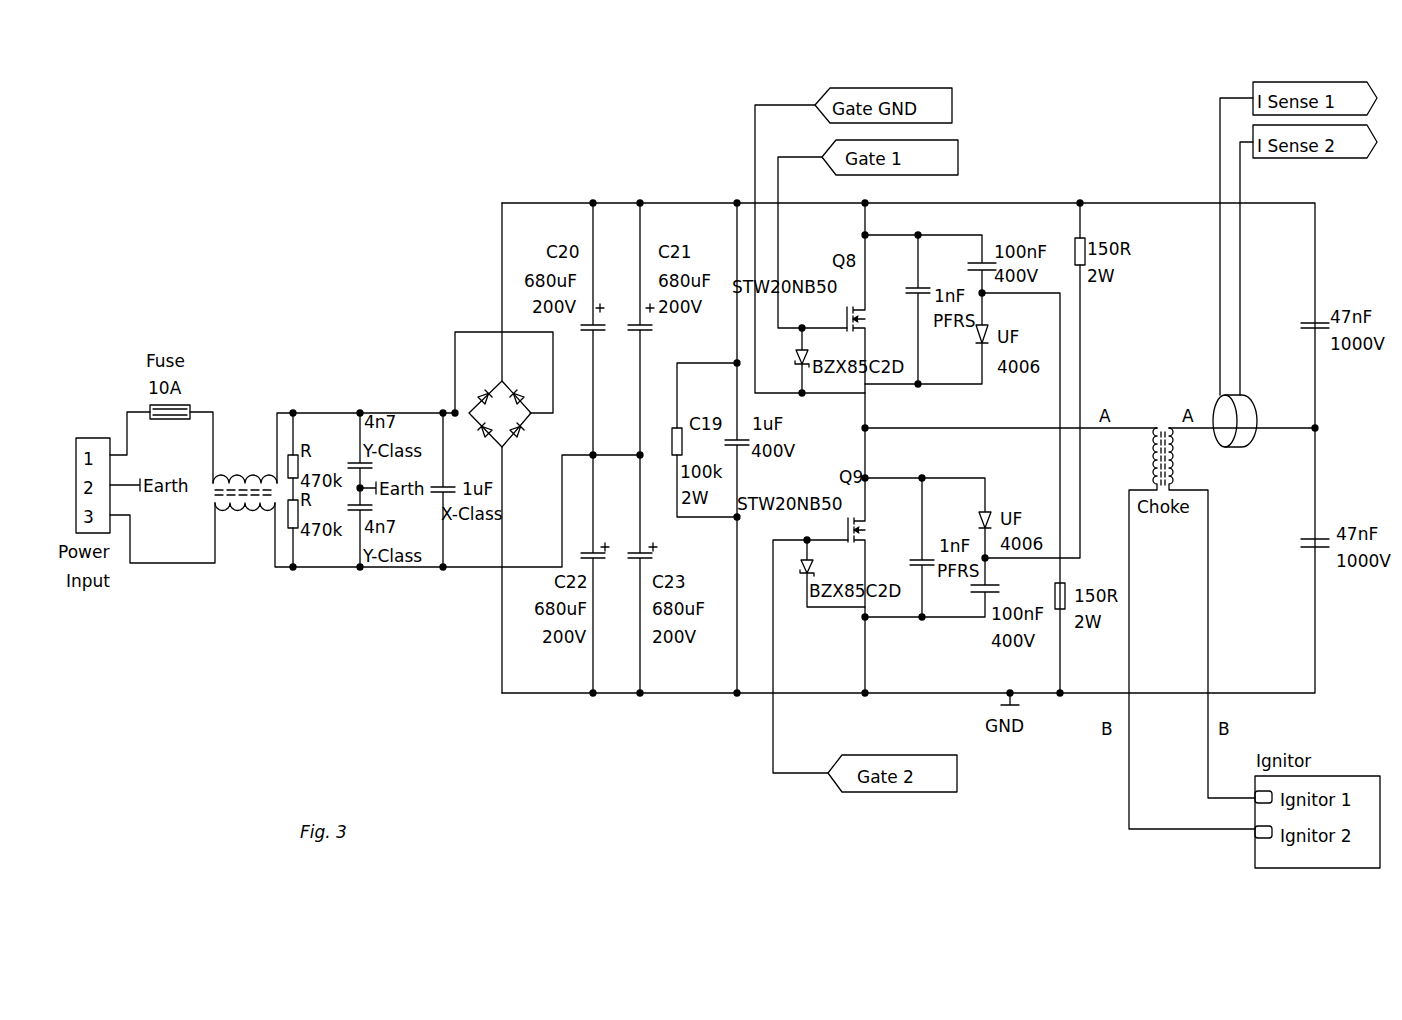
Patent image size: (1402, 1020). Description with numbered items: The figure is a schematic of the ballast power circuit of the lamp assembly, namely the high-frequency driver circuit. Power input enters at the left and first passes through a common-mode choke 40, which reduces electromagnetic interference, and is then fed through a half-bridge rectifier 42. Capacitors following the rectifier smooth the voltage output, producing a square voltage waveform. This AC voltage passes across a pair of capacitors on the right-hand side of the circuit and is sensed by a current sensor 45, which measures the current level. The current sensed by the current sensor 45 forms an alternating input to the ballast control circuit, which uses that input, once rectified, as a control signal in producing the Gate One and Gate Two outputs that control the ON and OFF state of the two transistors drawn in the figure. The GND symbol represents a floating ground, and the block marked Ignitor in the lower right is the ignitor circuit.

The common-mode choke 40 is at (242, 476).
The half-bridge rectifier 42 is at (468, 391).
The current sensor 45 is at (1253, 394).